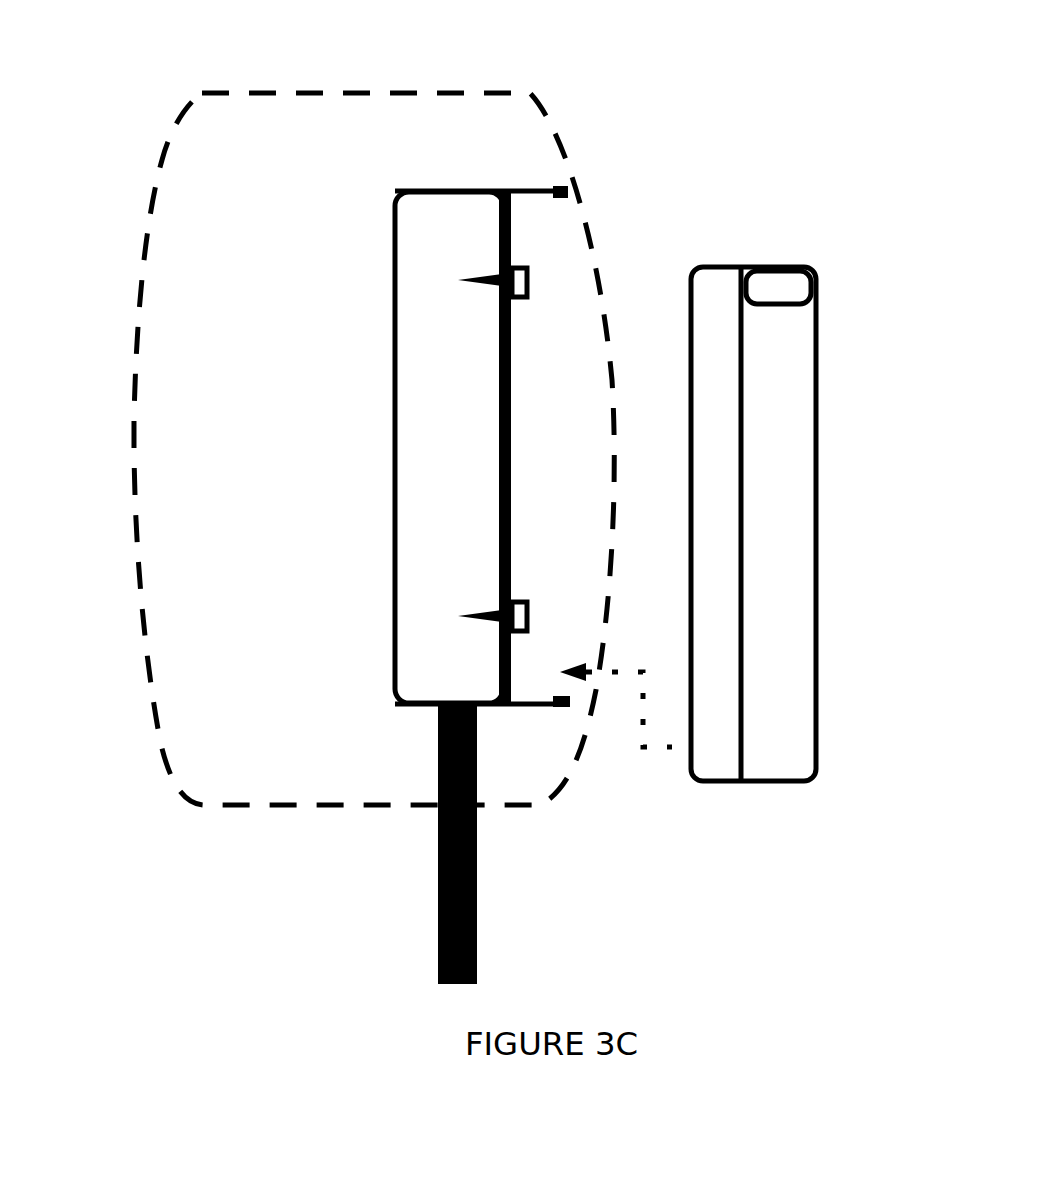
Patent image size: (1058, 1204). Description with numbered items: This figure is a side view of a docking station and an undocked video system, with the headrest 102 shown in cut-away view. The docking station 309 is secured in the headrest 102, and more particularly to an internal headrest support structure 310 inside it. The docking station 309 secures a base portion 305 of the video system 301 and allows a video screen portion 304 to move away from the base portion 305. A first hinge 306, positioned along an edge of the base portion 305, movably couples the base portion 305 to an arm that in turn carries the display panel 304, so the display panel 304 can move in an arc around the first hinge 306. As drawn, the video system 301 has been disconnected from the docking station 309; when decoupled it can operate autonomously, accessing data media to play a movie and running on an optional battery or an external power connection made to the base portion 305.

The headrest 102 is at (150, 243).
The video system 301 is at (676, 504).
The video display panel 304 is at (824, 454).
The video system base portion 305 is at (710, 265).
The first hinge 306 is at (820, 276).
The docking station 309 is at (562, 188).
The internal headrest support structure 310 is at (455, 188).